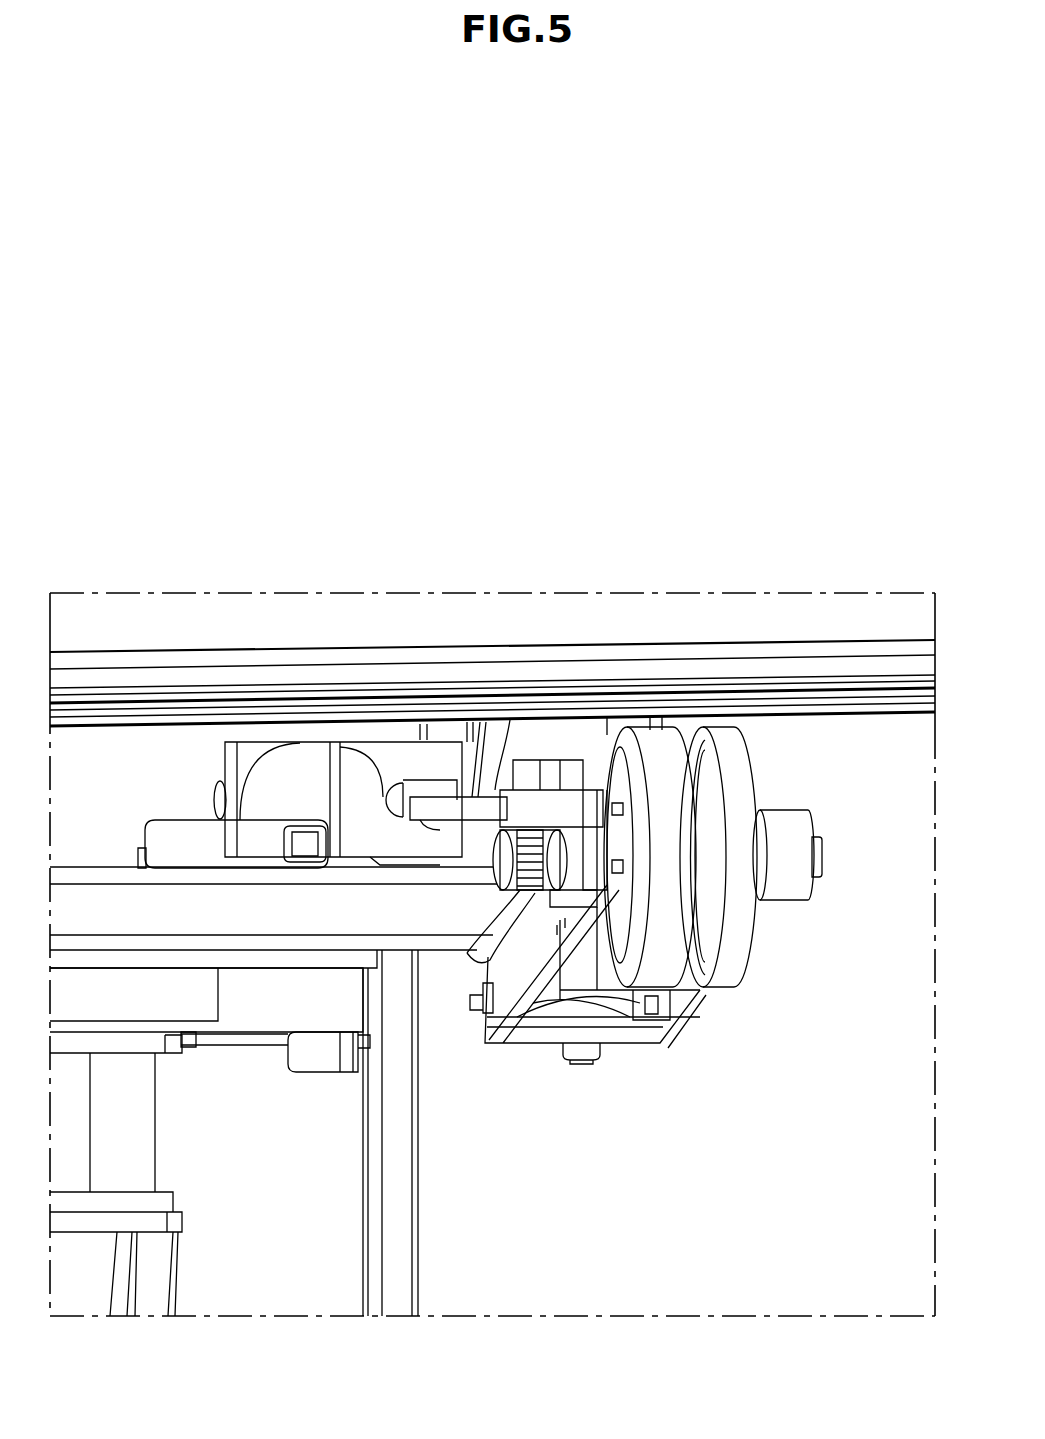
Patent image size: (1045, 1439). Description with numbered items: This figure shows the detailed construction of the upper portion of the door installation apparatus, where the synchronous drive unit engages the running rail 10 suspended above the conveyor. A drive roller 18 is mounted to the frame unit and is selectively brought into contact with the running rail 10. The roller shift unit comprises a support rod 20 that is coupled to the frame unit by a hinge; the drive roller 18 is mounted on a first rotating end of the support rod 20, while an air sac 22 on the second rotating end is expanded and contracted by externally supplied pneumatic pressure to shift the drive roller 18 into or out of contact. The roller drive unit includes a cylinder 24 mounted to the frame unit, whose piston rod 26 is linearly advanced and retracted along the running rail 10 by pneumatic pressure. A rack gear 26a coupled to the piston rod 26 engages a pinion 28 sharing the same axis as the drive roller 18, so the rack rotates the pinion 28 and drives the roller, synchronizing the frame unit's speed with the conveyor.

The running rail 10 is at (865, 662).
The drive roller 18 is at (737, 950).
The support rod 20 is at (520, 970).
The air sac 22 is at (643, 1013).
The cylinder 24 is at (300, 783).
The piston rod 26 is at (390, 792).
The rack gear 26a is at (490, 800).
The pinion 28 is at (470, 953).